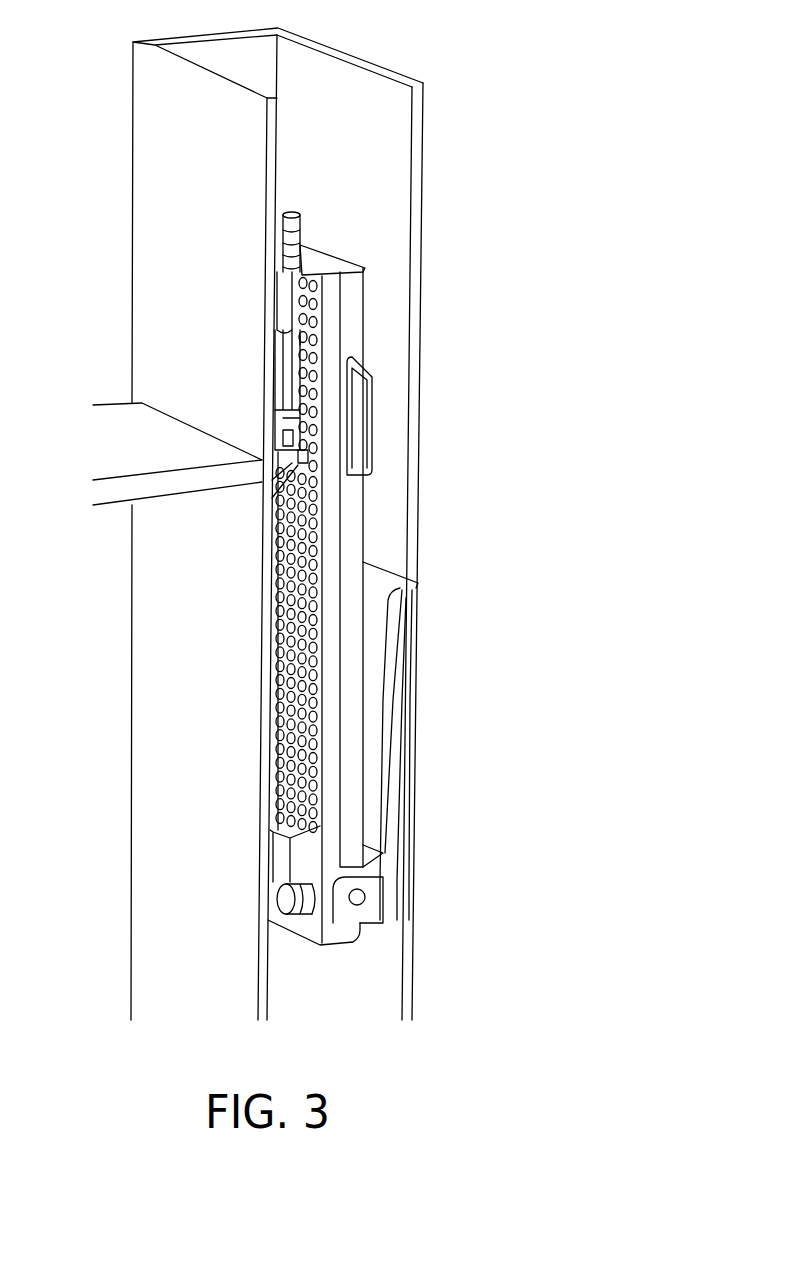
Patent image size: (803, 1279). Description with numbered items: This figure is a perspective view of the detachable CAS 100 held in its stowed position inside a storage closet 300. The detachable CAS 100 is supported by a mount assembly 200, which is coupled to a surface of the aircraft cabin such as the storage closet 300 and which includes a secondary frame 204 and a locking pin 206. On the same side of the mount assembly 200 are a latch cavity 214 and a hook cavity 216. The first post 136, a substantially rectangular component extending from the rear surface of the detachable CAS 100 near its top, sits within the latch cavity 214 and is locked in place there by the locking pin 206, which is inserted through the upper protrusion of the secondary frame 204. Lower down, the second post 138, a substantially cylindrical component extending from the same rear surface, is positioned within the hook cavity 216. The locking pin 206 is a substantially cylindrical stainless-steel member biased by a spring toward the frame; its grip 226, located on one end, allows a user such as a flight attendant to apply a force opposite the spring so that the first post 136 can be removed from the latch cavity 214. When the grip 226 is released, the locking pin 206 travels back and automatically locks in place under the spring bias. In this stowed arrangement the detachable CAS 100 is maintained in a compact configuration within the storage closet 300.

The storage closet 300 is at (176, 118).
The detachable CAS 100 is at (356, 330).
The locking pin 206 is at (290, 345).
The mount assembly 200 is at (262, 417).
The latch cavity 214 is at (275, 442).
The first post 136 is at (342, 456).
The secondary frame 204 is at (397, 785).
The hook cavity 216 is at (305, 885).
The second post 138 is at (284, 898).
The grip 226 is at (366, 897).